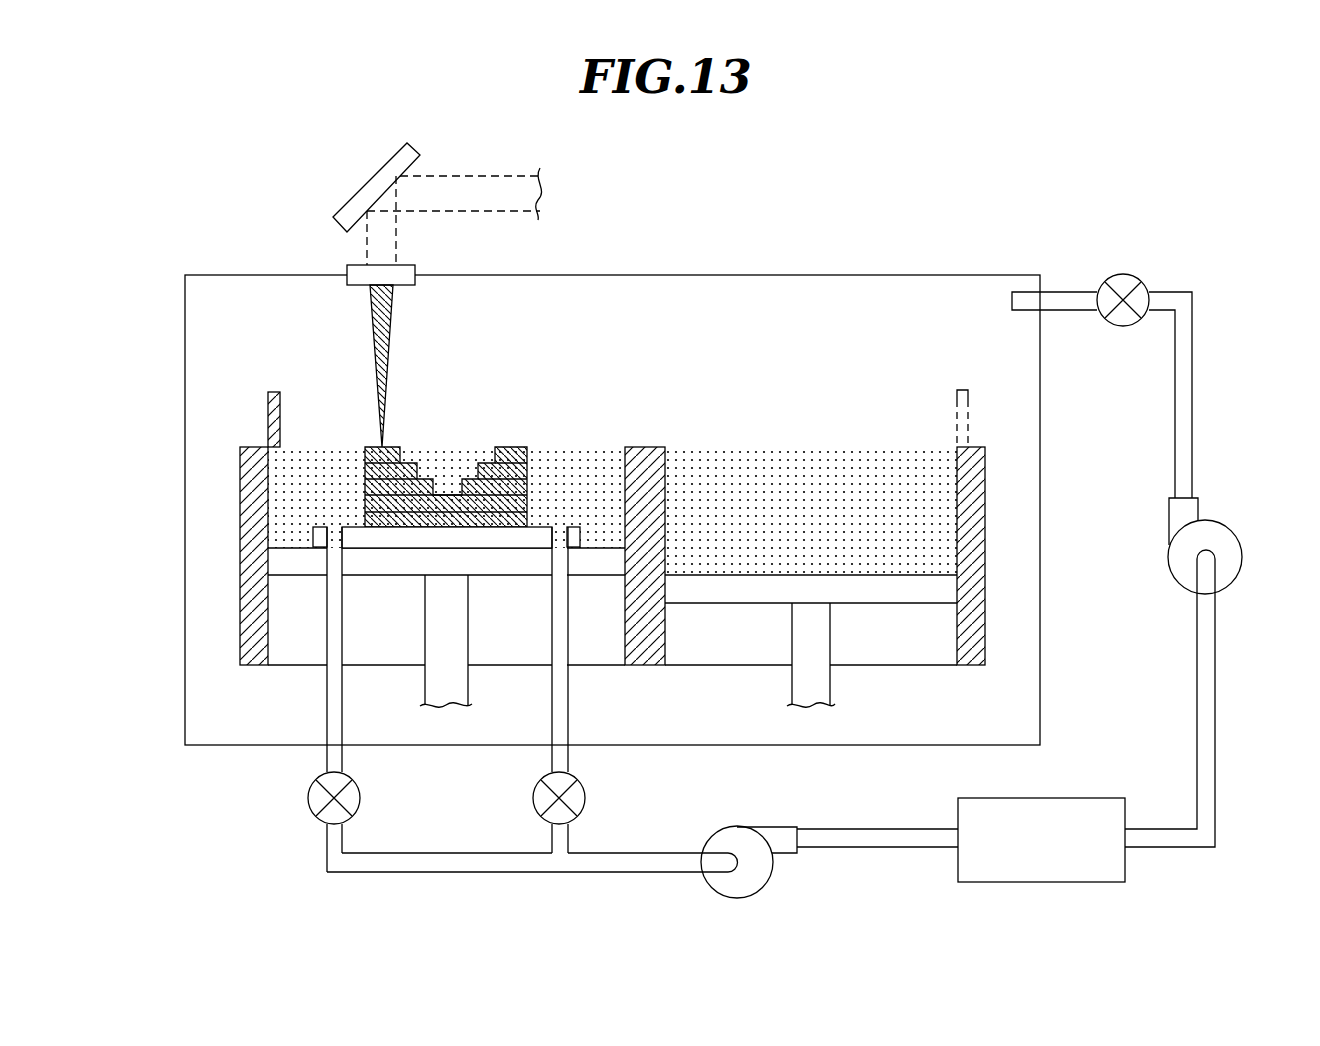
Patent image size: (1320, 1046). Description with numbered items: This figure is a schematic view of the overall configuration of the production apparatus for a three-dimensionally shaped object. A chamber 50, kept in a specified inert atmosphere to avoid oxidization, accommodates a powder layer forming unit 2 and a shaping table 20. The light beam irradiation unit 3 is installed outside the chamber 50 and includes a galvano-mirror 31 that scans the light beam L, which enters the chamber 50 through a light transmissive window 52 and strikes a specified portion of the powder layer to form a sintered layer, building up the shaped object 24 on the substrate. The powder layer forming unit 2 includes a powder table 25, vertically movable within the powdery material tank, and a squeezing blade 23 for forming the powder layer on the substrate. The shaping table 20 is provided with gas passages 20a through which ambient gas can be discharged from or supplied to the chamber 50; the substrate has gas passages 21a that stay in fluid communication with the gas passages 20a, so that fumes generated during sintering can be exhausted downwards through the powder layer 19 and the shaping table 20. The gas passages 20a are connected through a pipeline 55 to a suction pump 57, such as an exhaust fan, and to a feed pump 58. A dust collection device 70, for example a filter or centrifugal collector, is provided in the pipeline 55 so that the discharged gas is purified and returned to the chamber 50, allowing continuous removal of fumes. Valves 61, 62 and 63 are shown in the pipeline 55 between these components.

The powder layer forming unit 2 is at (628, 403).
The light beam irradiation unit 3 is at (318, 186).
The powder layer 19 is at (838, 447).
The shaping table 20 is at (510, 571).
The gas passages 20a is at (332, 567).
The gas passages 21a is at (332, 538).
The squeezing blade 23 is at (268, 395).
The shaped object 24 is at (510, 447).
The powder table 25 is at (902, 593).
The galvano-mirror 31 is at (378, 170).
The chamber 50 is at (748, 275).
The light transmissive window 52 is at (408, 264).
The pipeline 55 is at (335, 703).
The suction pump 57 is at (745, 896).
The feed pump 58 is at (1245, 555).
The valve 61 is at (360, 798).
The valve 62 is at (585, 798).
The valve 63 is at (1122, 275).
The dust collection device 70 is at (1040, 882).
The light beam L is at (387, 346).